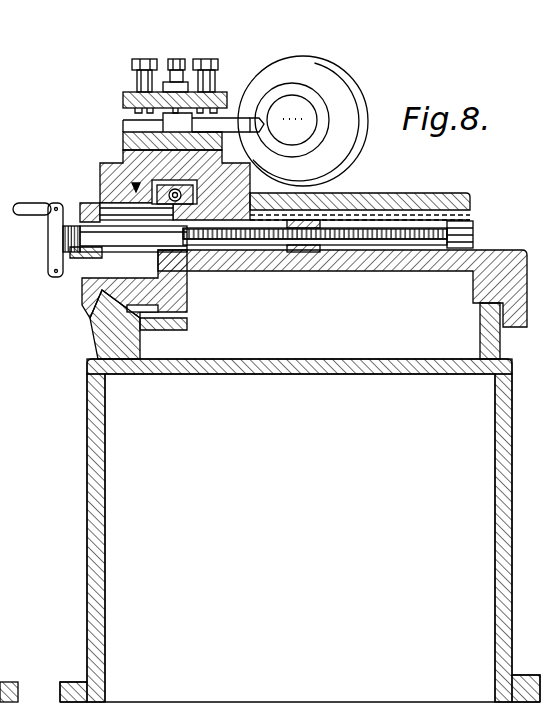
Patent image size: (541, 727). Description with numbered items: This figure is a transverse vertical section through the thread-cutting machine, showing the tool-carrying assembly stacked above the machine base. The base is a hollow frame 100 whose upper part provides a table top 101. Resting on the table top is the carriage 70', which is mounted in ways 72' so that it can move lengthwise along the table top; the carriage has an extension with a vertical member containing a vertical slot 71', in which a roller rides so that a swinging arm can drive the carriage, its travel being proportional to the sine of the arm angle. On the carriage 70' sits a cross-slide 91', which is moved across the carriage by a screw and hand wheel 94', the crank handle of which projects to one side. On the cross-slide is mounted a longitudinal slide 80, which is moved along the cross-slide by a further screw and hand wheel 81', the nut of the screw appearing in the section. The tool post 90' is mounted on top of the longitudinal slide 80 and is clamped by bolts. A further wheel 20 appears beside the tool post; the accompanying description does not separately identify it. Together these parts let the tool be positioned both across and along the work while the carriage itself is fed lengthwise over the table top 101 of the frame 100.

The hand wheel 20 is at (293, 111).
The tool post 90' is at (151, 86).
The longitudinal slide 80 is at (113, 173).
The screw and hand wheel 81' is at (195, 246).
The cross-slide 91' is at (360, 189).
The screw and hand wheel 94' is at (238, 240).
The carriage 70' is at (342, 270).
The vertical slot 71' is at (93, 315).
The ways 72' is at (250, 324).
The hollow frame 100 is at (100, 457).
The table top 101 is at (356, 344).